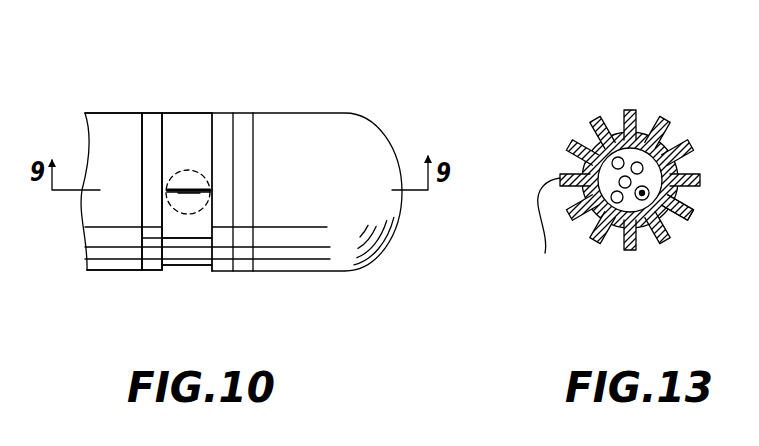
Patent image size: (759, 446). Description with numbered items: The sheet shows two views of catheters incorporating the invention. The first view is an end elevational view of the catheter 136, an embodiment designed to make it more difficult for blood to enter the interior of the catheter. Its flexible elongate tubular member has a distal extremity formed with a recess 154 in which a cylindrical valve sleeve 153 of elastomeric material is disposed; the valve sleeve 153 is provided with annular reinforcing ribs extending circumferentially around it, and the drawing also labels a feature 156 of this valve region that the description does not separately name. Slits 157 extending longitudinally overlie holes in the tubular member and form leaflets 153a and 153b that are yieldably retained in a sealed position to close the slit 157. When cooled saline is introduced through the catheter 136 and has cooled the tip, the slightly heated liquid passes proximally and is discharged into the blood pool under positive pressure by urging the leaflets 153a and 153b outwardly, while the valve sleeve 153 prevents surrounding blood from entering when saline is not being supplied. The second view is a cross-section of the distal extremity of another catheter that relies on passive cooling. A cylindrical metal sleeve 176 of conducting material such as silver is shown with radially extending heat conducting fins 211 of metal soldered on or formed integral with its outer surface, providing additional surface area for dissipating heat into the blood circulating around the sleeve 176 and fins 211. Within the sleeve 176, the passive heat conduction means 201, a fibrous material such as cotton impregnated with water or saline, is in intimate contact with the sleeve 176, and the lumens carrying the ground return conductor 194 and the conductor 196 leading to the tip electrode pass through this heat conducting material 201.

In FIG. 10, the catheter 136 is at (114, 108).
In FIG. 10, the valve sleeve 153 is at (197, 127).
In FIG. 10, the leaflet 153a is at (184, 194).
In FIG. 10, the leaflet 153b is at (174, 174).
In FIG. 10, the recess 154 is at (153, 128).
In FIG. 10, the groove 156 is at (163, 118).
In FIG. 10, the slits 157 is at (198, 216).
In FIG. 13, the metal sleeve 176 is at (650, 197).
In FIG. 13, the ground return conductor 194 is at (617, 204).
In FIG. 13, the conductor 196 is at (670, 220).
In FIG. 13, the passive heat conduction means 201 is at (632, 222).
In FIG. 13, the heat conducting fins 211 is at (540, 234).